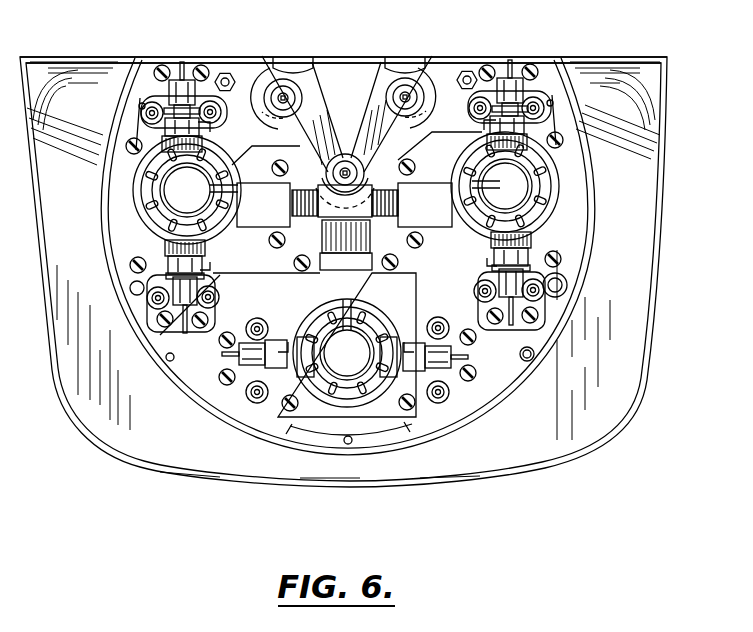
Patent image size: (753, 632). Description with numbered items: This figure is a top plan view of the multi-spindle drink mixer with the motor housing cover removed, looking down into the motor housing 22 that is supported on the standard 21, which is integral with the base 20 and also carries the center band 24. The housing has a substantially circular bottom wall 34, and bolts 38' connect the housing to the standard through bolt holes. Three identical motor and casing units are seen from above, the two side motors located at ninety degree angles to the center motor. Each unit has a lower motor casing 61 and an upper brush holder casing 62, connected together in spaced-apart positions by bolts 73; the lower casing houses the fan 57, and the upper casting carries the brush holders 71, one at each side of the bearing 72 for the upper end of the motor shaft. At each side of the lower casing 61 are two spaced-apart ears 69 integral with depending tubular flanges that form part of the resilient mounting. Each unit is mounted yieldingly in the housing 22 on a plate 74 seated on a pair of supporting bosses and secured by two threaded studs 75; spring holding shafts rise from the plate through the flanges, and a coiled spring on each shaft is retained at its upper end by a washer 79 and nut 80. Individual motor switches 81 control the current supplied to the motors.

The base 20 is at (112, 443).
The standard 21 is at (620, 83).
The motor housing 22 is at (566, 290).
The center band 24 is at (396, 432).
The bottom wall 34 is at (524, 362).
The bolts 38' is at (346, 193).
The fan 57 is at (354, 442).
The lower motor casing 61 is at (101, 226).
The upper brush holder casing 62 is at (135, 247).
The ears 69 is at (226, 72).
The brush holders 71 is at (204, 132).
The bearing 72 is at (190, 188).
The bolts 73 is at (128, 149).
The plate 74 is at (150, 118).
The threaded studs 75 is at (201, 66).
The washer 79 is at (141, 104).
The nut 80 is at (141, 116).
The motor switches 81 is at (284, 86).